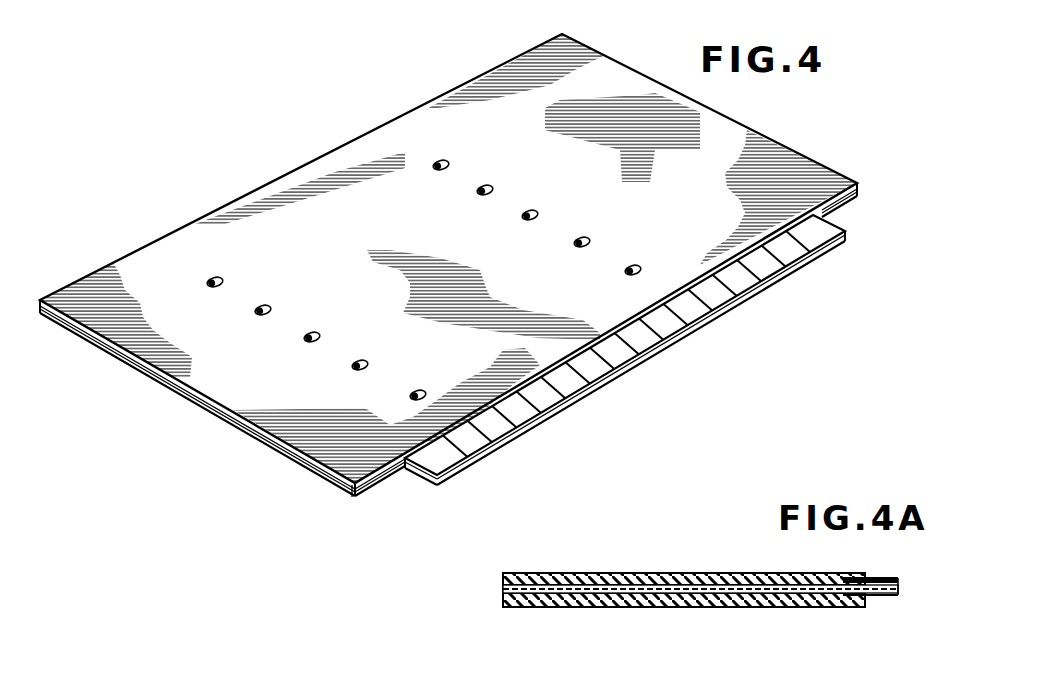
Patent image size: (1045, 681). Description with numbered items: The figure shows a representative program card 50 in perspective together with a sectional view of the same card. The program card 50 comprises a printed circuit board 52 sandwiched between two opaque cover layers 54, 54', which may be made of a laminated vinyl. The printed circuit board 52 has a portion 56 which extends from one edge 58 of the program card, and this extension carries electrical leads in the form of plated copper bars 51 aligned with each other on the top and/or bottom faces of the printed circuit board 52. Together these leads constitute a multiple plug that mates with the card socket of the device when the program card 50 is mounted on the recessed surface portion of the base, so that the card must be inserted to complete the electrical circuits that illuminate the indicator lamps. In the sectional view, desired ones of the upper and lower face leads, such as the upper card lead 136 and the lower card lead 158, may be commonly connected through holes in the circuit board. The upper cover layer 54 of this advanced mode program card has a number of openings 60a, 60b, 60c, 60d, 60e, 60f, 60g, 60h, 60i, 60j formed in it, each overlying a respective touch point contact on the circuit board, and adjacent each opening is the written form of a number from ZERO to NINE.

In FIG. 4, the program card 50 is at (330, 122).
In FIG. 4A, the program card 50 is at (708, 540).
In FIG. 4, the plated copper bars 51 is at (715, 310).
In FIG. 4, the printed circuit board 52 is at (160, 388).
In FIG. 4A, the printed circuit board 52 is at (503, 589).
In FIG. 4, the opaque cover layer 54 is at (448, 258).
In FIG. 4A, the opaque cover layer 54 is at (684, 557).
In FIG. 4, the opaque cover layer 54' is at (448, 339).
In FIG. 4A, the opaque cover layer 54' is at (684, 627).
In FIG. 4, the extension portion of printed circuit board 56 is at (823, 254).
In FIG. 4A, the extension portion of printed circuit board 56 is at (898, 587).
In FIG. 4, the edge of program card 58 is at (375, 485).
In FIG. 4, the opening 60a is at (627, 277).
In FIG. 4, the opening 60b is at (577, 249).
In FIG. 4, the opening 60c is at (527, 222).
In FIG. 4, the opening 60d is at (481, 197).
In FIG. 4, the opening 60e is at (437, 171).
In FIG. 4, the opening 60f is at (414, 401).
In FIG. 4, the opening 60g is at (357, 369).
In FIG. 4, the opening 60h is at (307, 343).
In FIG. 4, the opening 60i is at (258, 315).
In FIG. 4, the opening 60j is at (210, 286).
In FIG. 4A, the upper card lead 136 is at (887, 578).
In FIG. 4A, the lower card lead 158 is at (877, 596).